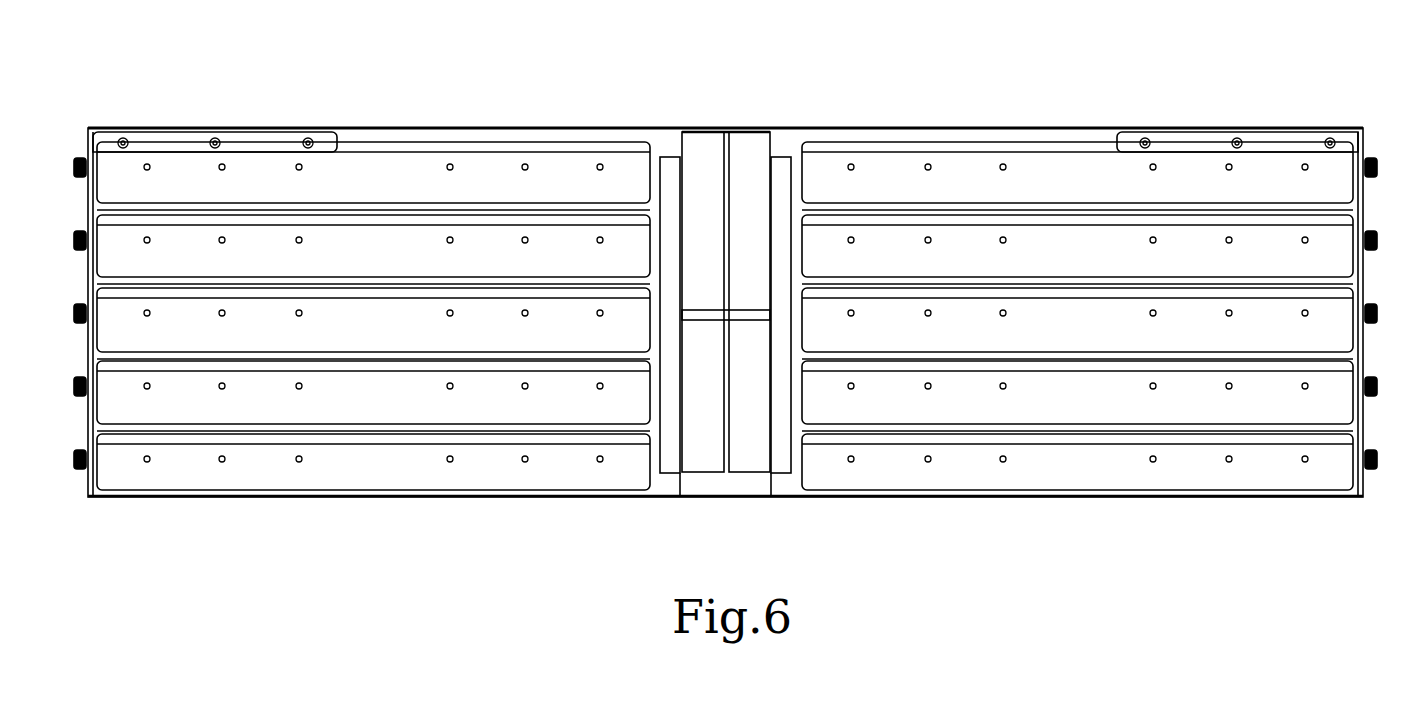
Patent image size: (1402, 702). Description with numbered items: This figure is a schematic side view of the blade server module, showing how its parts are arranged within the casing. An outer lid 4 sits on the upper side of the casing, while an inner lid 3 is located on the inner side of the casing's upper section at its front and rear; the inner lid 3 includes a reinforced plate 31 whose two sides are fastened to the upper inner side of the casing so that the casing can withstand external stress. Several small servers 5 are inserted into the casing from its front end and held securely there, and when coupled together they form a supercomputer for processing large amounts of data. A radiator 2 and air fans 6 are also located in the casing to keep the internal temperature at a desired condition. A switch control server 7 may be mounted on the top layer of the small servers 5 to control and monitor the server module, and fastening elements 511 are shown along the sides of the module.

The radiator 2 is at (782, 131).
The inner lid 3 is at (725, 101).
The reinforced plate 31 is at (201, 147).
The outer lid 4 is at (625, 128).
The small server 5 is at (182, 476).
The latch 511 is at (84, 157).
The air fan 6 is at (702, 195).
The switch control server 7 is at (427, 167).